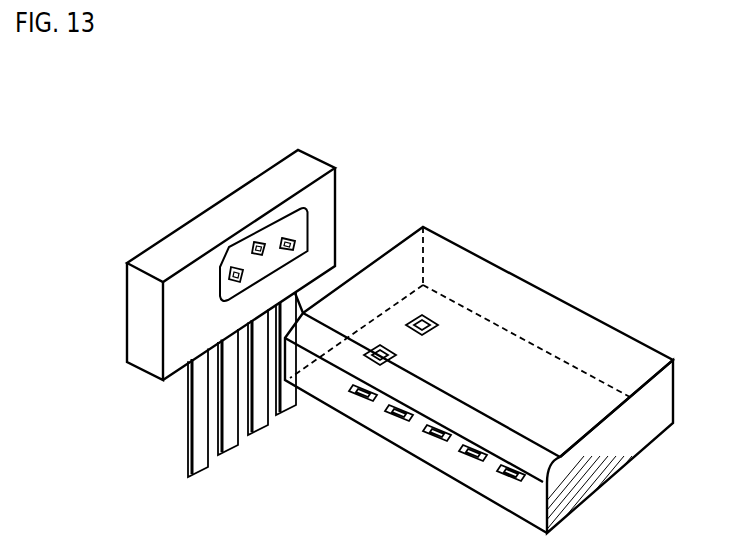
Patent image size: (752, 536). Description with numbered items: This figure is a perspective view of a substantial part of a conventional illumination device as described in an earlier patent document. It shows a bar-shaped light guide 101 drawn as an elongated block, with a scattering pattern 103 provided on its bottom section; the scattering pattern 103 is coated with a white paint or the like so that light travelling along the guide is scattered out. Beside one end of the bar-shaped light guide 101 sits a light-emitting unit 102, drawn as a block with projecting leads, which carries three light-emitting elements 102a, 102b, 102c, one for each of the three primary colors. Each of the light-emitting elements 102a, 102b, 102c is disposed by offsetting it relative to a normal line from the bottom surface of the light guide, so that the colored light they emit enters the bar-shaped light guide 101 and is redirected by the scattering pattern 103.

The bar-shaped light guide 101 is at (481, 264).
The light-emitting unit 102 is at (140, 326).
The light-emitting element 102a is at (237, 264).
The light-emitting element 102b is at (260, 242).
The light-emitting element 102c is at (290, 238).
The scattering pattern 103 is at (430, 438).